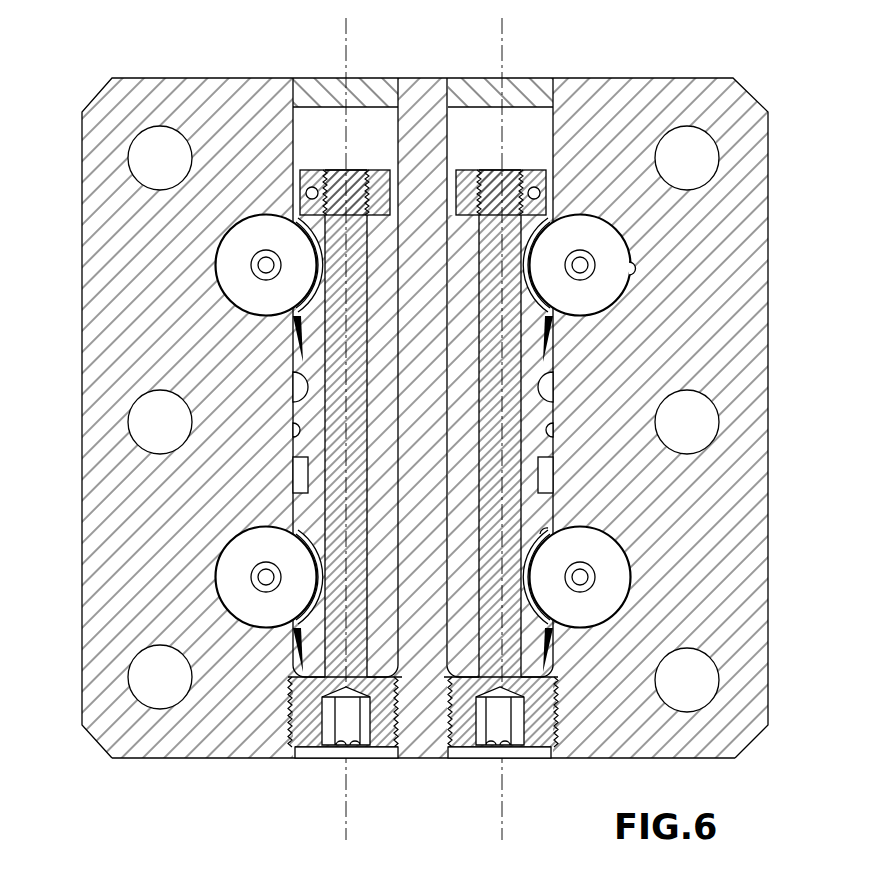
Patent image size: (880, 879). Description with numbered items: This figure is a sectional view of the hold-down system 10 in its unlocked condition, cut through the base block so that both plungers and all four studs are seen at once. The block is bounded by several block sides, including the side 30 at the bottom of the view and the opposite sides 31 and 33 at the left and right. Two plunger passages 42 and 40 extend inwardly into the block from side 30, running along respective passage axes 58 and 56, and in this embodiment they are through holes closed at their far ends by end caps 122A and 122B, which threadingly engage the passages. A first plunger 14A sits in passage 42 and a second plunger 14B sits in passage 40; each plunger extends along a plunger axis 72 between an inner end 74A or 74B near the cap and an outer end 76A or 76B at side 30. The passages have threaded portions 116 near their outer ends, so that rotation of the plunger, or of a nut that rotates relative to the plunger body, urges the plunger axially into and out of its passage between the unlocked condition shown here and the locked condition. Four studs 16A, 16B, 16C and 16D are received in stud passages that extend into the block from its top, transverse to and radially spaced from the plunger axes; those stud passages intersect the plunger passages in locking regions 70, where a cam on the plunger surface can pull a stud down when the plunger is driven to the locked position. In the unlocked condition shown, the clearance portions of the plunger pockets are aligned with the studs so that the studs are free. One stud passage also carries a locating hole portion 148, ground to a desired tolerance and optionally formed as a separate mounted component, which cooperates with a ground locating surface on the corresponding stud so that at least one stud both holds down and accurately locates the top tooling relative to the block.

The system 10 is at (750, 63).
The end cap 122A is at (308, 80).
The end cap 122B is at (462, 80).
The passage axis 58 is at (350, 39).
The passage axis 56 is at (505, 39).
The inner end 74A is at (313, 170).
The inner end 74B is at (469, 170).
The stud 16A is at (244, 240).
The stud 16B is at (606, 242).
The stud 16C is at (244, 552).
The stud 16D is at (606, 556).
The locating hole portion 148 is at (632, 268).
The block side 31 is at (82, 330).
The block side 33 is at (768, 338).
The plunger passage 42 is at (293, 428).
The plunger passage 40 is at (553, 428).
The locking region 70 is at (538, 534).
The threaded portion 116 is at (288, 704).
The plunger 14A is at (317, 758).
The plunger 14B is at (529, 758).
The outer end 76A is at (375, 748).
The outer end 76B is at (471, 748).
The block side 30 is at (577, 760).
The plunger axis 72 is at (346, 817).